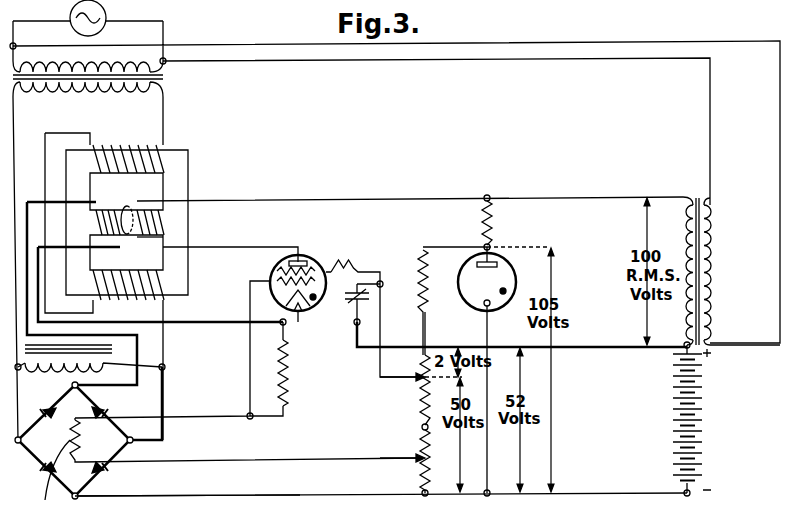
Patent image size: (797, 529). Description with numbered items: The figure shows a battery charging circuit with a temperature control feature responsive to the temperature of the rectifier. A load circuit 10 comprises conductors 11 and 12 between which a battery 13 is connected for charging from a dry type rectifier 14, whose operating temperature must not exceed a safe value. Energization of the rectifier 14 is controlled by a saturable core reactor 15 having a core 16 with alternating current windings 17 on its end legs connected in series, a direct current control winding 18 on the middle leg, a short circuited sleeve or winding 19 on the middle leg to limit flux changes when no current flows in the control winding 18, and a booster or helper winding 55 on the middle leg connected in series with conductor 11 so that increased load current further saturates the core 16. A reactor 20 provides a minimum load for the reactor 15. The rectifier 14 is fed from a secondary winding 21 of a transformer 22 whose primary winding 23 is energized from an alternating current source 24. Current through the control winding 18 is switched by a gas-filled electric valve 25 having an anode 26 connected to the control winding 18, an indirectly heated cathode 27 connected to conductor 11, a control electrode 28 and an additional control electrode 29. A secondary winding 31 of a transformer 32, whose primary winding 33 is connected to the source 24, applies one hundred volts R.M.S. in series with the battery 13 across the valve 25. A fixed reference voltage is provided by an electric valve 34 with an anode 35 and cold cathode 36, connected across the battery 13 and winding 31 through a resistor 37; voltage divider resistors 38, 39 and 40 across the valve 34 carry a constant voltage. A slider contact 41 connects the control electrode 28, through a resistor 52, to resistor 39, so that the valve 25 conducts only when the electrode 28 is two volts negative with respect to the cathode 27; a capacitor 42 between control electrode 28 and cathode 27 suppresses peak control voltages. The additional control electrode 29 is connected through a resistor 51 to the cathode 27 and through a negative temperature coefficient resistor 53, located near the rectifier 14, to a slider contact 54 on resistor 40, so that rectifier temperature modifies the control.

The load circuit 10 is at (284, 275).
The conductor 11 is at (182, 323).
The conductor 12 is at (262, 494).
The battery 13 is at (728, 413).
The rectifier 14 is at (40, 415).
The saturable core reactor 15 is at (132, 223).
The core 16 is at (185, 194).
The alternating current windings 17 is at (140, 262).
The control winding 18 is at (146, 237).
The short circuited sleeve or winding 19 is at (126, 207).
The reactor 20 is at (54, 371).
The secondary winding 21 is at (97, 90).
The transformer 22 is at (200, 86).
The primary winding 23 is at (106, 56).
The source of alternating current 24 is at (106, 19).
The gas-filled electric valve 25 is at (330, 238).
The anode 26 is at (283, 262).
The cathode 27 is at (284, 303).
The control electrode 28 is at (312, 268).
The additional control electrode 29 is at (272, 279).
The secondary winding 31 is at (682, 238).
The transformer 32 is at (716, 257).
The primary winding 33 is at (715, 251).
The electric valve 34 is at (491, 370).
The anode 35 is at (477, 264).
The cold cathode 36 is at (447, 333).
The resistor 37 is at (490, 230).
The resistor 38 is at (420, 256).
The resistor 39 is at (428, 403).
The resistor 40 is at (428, 459).
The slider contact 41 is at (420, 380).
The capacitor 42 is at (361, 298).
The resistor 51 is at (289, 357).
The resistor 52 is at (351, 265).
The negative temperature coefficient resistor 53 is at (80, 440).
The slider contact 54 is at (422, 460).
The booster or helper winding 55 is at (99, 208).